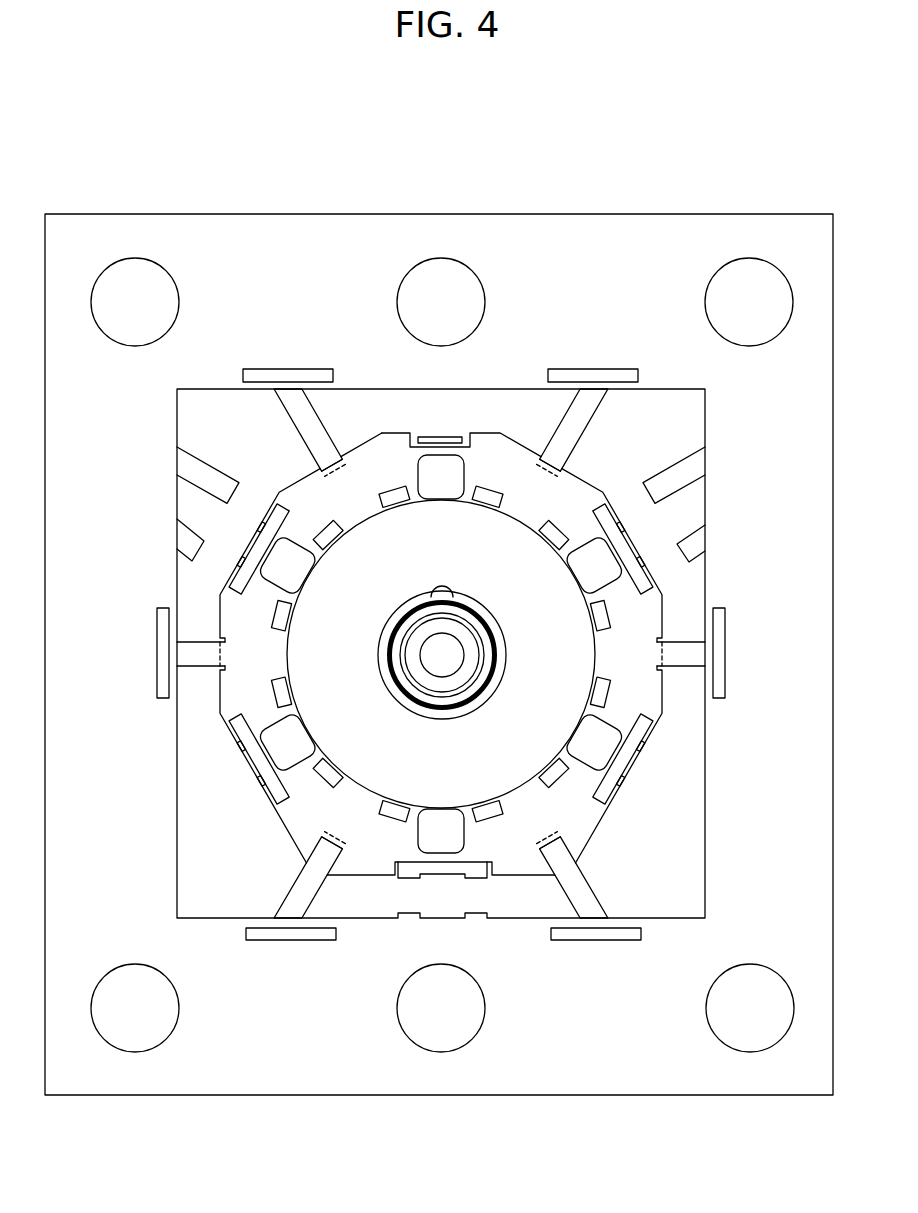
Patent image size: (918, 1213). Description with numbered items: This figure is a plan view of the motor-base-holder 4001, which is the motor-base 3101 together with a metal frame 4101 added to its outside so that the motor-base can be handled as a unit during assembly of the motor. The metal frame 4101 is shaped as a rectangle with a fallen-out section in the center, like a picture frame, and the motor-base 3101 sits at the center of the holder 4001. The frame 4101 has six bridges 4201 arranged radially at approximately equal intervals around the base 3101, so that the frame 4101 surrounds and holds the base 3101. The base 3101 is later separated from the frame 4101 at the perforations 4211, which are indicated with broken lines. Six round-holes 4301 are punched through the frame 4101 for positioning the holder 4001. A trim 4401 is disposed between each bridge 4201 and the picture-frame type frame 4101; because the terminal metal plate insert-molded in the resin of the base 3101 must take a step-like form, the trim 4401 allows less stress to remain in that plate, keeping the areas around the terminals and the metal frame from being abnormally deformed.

The motor-base-holder 4001 is at (330, 214).
The metal frame 4101 is at (292, 248).
The bridge 4201 is at (325, 447).
The perforation 4211 is at (326, 458).
The round-hole 4301 is at (745, 288).
The trim 4401 is at (595, 373).
The motor-base 3101 is at (493, 468).